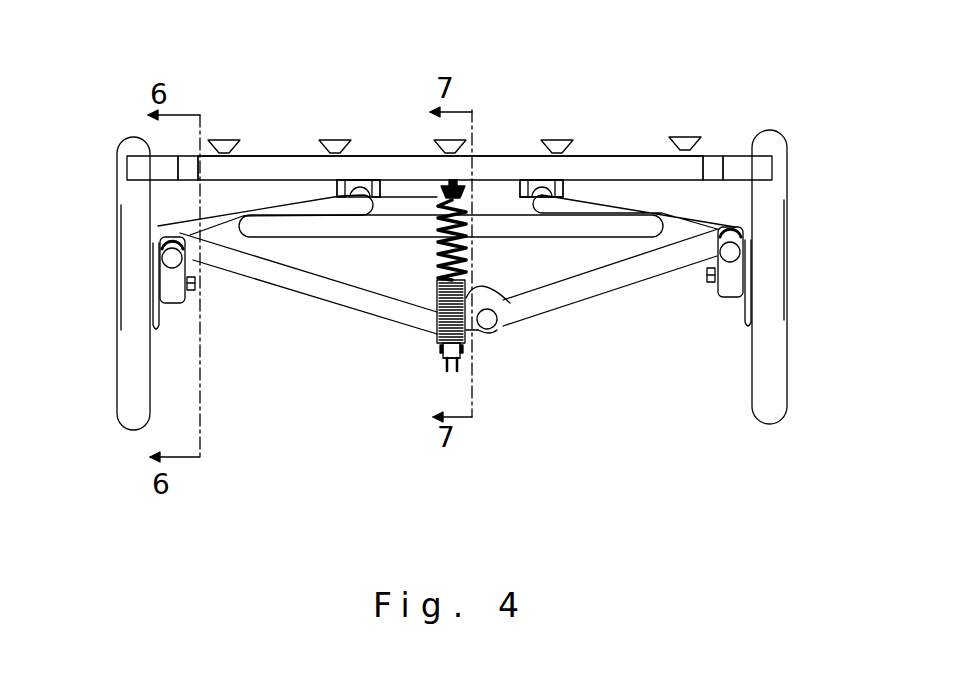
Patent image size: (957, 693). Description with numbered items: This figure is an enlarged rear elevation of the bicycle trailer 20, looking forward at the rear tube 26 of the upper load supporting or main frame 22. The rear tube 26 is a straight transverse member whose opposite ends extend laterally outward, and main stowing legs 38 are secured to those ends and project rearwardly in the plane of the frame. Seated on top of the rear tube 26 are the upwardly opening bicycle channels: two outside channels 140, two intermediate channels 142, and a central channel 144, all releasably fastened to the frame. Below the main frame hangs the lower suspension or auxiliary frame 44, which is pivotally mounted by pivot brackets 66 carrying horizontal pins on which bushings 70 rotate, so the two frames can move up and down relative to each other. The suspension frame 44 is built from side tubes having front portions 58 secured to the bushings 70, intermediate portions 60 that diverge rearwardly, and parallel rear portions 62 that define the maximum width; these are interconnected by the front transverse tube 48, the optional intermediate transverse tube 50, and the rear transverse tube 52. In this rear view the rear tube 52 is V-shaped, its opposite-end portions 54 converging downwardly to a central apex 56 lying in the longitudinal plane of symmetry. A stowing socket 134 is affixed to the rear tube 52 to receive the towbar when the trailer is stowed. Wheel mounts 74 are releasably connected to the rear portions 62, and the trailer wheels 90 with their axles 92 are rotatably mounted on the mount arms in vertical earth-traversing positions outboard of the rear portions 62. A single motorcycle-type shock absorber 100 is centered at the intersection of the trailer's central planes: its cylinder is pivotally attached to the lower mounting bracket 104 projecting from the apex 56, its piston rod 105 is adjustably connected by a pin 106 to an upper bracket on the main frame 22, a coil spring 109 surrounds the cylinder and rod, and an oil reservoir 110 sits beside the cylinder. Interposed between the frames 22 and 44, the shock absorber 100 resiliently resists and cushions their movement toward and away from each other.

The trailer 20 is at (633, 360).
The load supporting or main frame 22 is at (737, 151).
The rear tube 26 is at (253, 156).
The main stowing legs 38 is at (183, 168).
The suspension or auxiliary frame 44 is at (595, 318).
The front transverse tube 48 is at (413, 203).
The intermediate transverse tube 50 is at (413, 230).
The rear transverse tube 52 is at (313, 303).
The opposite-end portions 54 is at (193, 250).
The central apex 56 is at (430, 323).
The front portions 58 is at (527, 187).
The intermediate portions 60 is at (223, 228).
The rear portions 62 is at (173, 258).
The pivot brackets 66 is at (345, 190).
The bushings 70 is at (380, 180).
The wheel mounts 74 is at (150, 240).
The trailer wheels 90 is at (128, 383).
The axles 92 is at (156, 312).
The shock absorber 100 is at (425, 315).
The lower mounting bracket 104 is at (458, 367).
The piston rod 105 is at (470, 217).
The pin 106 is at (473, 200).
The coil spring 109 is at (497, 325).
The oil reservoir 110 is at (478, 357).
The stowing socket or coupling 134 is at (495, 333).
The outside bicycle channels 140 is at (225, 138).
The intermediate bicycle channels 142 is at (336, 138).
The central bicycle channel 144 is at (440, 138).